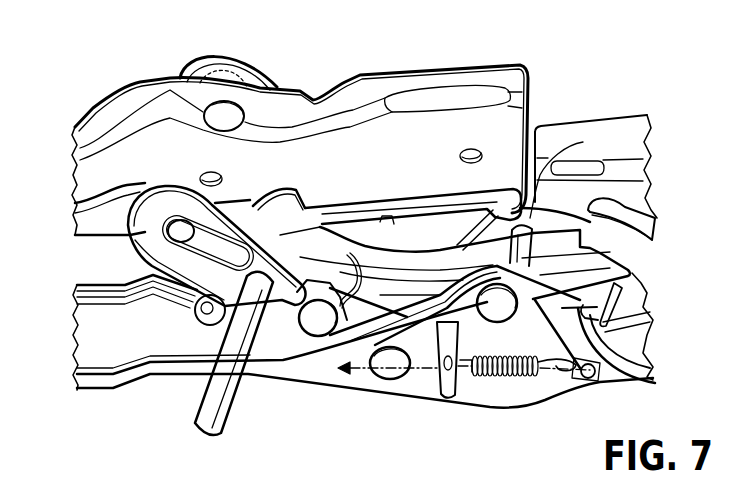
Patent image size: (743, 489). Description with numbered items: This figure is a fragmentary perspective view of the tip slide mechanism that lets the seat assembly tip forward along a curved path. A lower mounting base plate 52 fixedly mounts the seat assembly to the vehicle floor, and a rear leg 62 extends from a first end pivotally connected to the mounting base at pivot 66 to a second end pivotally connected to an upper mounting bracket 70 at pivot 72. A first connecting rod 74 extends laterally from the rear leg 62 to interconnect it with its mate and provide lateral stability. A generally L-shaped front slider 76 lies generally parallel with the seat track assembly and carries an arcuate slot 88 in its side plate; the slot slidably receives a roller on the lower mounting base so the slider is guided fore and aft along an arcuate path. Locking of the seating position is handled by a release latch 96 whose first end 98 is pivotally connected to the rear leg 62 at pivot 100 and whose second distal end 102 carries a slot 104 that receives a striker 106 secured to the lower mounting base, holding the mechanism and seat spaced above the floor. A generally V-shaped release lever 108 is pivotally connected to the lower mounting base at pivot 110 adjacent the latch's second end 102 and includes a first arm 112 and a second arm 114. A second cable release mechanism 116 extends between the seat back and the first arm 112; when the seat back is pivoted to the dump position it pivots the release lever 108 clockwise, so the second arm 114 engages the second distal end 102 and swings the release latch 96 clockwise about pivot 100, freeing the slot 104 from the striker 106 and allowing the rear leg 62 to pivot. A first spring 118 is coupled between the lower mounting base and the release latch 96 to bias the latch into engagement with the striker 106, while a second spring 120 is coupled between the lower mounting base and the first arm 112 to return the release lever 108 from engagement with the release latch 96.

The lower mounting base plate 52 is at (85, 323).
The rear leg 62 is at (147, 237).
The pivot 66 is at (390, 371).
The upper mounting bracket 70 is at (360, 90).
The pivot 72 is at (218, 116).
The first connecting rod 74 is at (212, 432).
The front slider 76 is at (627, 130).
The arcuate slot 88 is at (650, 203).
The release latch 96 is at (403, 260).
The first end 98 is at (194, 320).
The pivot 100 is at (318, 326).
The second distal end 102 is at (603, 262).
The slot 104 is at (466, 243).
The striker 106 is at (562, 199).
The release lever 108 is at (645, 332).
The pivot 110 is at (497, 307).
The first arm 112 is at (590, 382).
The second arm 114 is at (633, 278).
The second cable release mechanism 116 is at (358, 375).
The first spring 118 is at (350, 253).
The second spring 120 is at (488, 379).